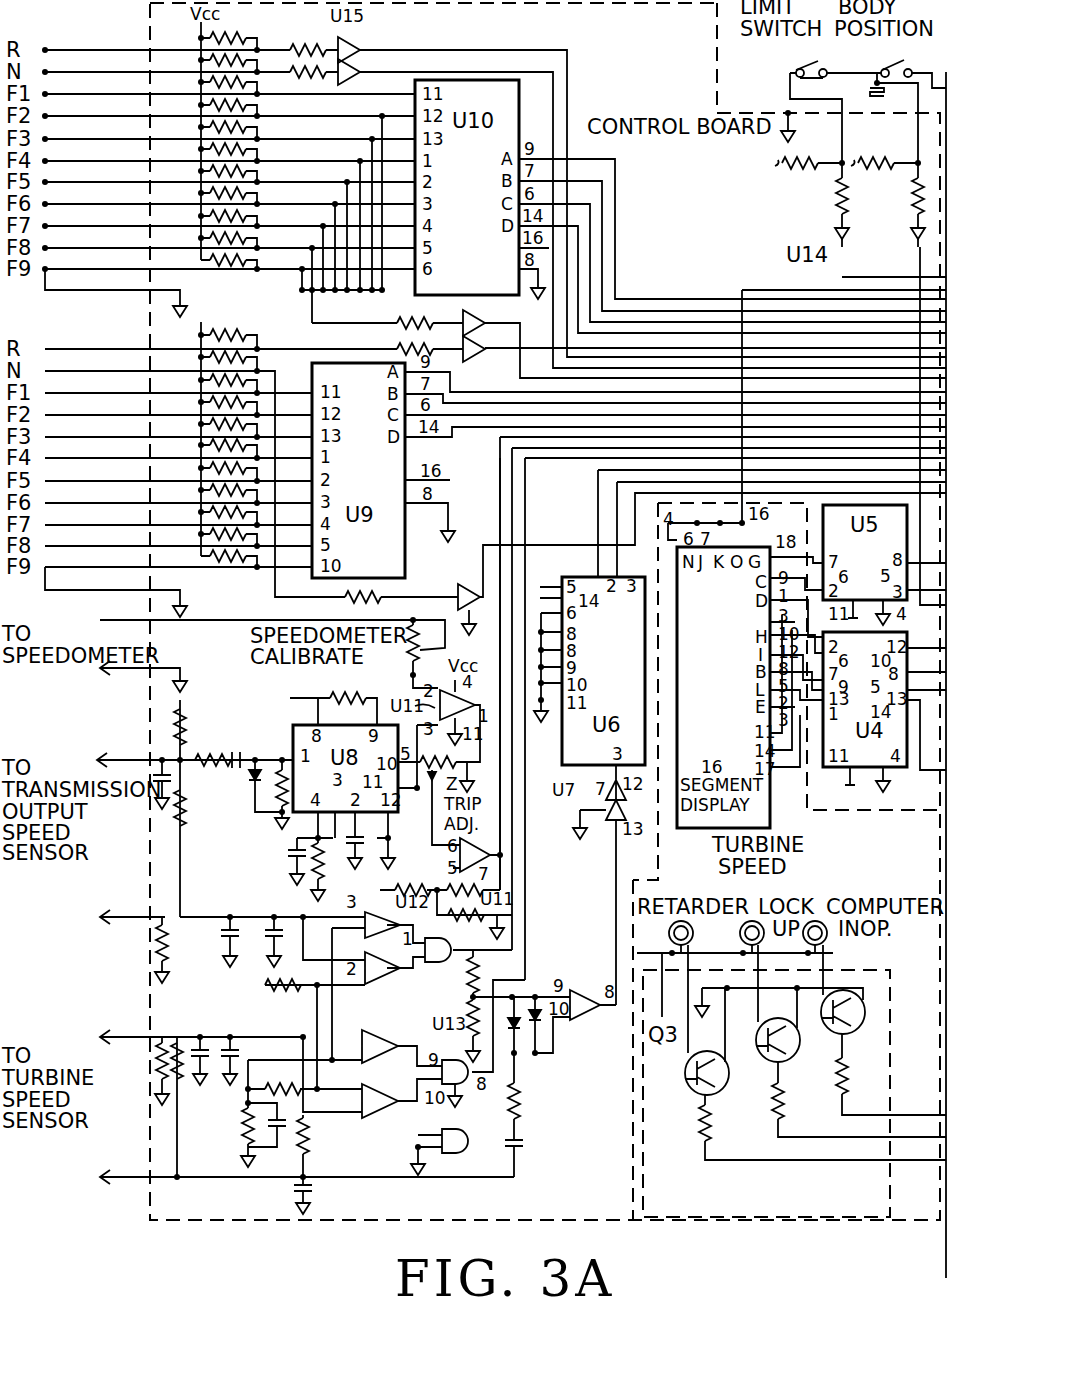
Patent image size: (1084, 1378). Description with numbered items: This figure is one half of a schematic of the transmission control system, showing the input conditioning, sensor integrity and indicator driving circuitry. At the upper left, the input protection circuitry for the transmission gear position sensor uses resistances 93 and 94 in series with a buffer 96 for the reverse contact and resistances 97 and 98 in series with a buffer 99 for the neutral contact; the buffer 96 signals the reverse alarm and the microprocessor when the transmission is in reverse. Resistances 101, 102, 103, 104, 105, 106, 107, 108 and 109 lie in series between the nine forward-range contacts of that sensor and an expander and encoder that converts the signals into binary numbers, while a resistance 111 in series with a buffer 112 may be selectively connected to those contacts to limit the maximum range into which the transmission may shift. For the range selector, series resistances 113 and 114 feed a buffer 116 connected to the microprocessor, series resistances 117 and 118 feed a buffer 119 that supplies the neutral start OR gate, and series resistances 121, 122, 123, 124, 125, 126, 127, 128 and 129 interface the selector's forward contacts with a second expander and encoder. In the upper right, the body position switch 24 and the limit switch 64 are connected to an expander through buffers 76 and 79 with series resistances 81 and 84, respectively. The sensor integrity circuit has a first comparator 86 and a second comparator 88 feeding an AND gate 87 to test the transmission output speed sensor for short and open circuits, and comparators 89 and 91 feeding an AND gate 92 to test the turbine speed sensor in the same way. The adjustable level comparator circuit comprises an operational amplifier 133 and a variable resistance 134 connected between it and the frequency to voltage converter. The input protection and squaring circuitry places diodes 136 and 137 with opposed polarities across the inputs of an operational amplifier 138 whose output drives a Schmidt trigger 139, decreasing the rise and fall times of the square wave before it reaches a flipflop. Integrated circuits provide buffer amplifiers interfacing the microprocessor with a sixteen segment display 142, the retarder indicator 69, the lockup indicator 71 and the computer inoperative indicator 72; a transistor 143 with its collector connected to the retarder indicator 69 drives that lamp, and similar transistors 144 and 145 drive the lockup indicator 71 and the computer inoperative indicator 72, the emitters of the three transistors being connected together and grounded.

The resistance 93 is at (192, 33).
The resistance 97 is at (192, 55).
The resistance 101 is at (192, 77).
The resistance 102 is at (192, 100).
The resistance 103 is at (192, 122).
The resistance 104 is at (192, 144).
The resistance 105 is at (192, 166).
The resistance 106 is at (192, 188).
The resistance 107 is at (192, 211).
The resistance 108 is at (192, 233).
The resistance 109 is at (192, 255).
The resistance 94 is at (286, 46).
The buffer 96 is at (354, 44).
The resistance 98 is at (308, 72).
The buffer 99 is at (353, 74).
The resistance 111 is at (398, 320).
The buffer 112 is at (482, 320).
The resistance 114 is at (398, 346).
The buffer 116 is at (472, 358).
The resistance 113 is at (192, 330).
The resistance 117 is at (192, 352).
The resistance 121 is at (192, 375).
The resistance 122 is at (192, 397).
The resistance 123 is at (192, 419).
The resistance 124 is at (192, 440).
The resistance 125 is at (192, 463).
The resistance 126 is at (192, 485).
The resistance 127 is at (192, 507).
The resistance 128 is at (192, 529).
The resistance 129 is at (192, 551).
The resistance 118 is at (340, 597).
The buffer 119 is at (462, 592).
The variable resistance 134 is at (408, 668).
The operational amplifier 133 is at (456, 758).
The first comparator 86 is at (392, 890).
The AND gate 87 is at (449, 962).
The second comparator 88 is at (385, 982).
The comparator 89 is at (360, 1020).
The comparator 91 is at (382, 1118).
The AND gate 92 is at (464, 1088).
The diode 136 is at (518, 1078).
The diode 137 is at (540, 1040).
The operational amplifier 138 is at (590, 992).
The Schmidt trigger 139 is at (612, 828).
The sixteen segment display 142 is at (735, 664).
The transistor 143 is at (728, 1094).
The transistor 144 is at (802, 1062).
The transistor 145 is at (866, 1032).
The retarder indicator 69 is at (670, 935).
The lockup indicator 71 is at (742, 940).
The computer inoperative indicator 72 is at (825, 941).
The limit switch 64 is at (796, 68).
The body position switch 24 is at (892, 62).
The series resistance 84 is at (832, 186).
The series resistance 81 is at (910, 186).
The buffer 79 is at (848, 238).
The buffer 76 is at (916, 242).